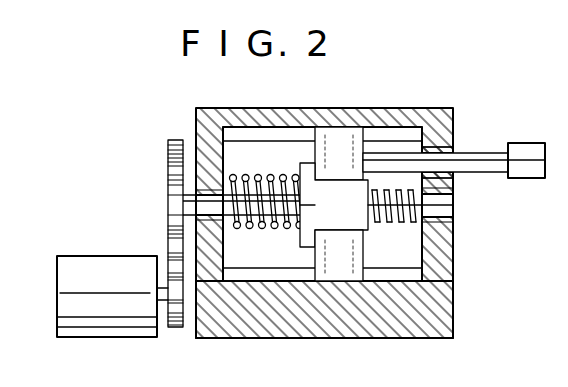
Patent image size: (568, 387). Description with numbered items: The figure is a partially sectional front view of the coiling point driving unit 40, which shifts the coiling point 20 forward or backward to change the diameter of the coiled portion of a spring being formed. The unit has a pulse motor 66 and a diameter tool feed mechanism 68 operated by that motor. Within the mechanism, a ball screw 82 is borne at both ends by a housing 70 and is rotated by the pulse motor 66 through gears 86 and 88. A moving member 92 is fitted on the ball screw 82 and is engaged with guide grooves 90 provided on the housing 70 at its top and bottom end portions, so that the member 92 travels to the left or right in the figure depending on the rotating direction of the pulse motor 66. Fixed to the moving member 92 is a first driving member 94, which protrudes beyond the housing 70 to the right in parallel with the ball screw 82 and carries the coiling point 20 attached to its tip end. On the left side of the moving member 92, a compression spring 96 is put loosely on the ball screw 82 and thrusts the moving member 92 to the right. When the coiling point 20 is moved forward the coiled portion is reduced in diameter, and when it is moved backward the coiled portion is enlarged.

The coiling point 20 is at (532, 149).
The coiling point driving unit 40 is at (172, 140).
The pulse motor 66 is at (103, 270).
The diameter tool feed mechanism 68 is at (339, 110).
The housing 70 is at (253, 320).
The ball screw 82 is at (395, 225).
The gear 86 is at (172, 225).
The gear 88 is at (172, 170).
The guide grooves 90 is at (405, 136).
The moving member 92 is at (352, 282).
The first driving member 94 is at (462, 157).
The compression spring 96 is at (260, 174).